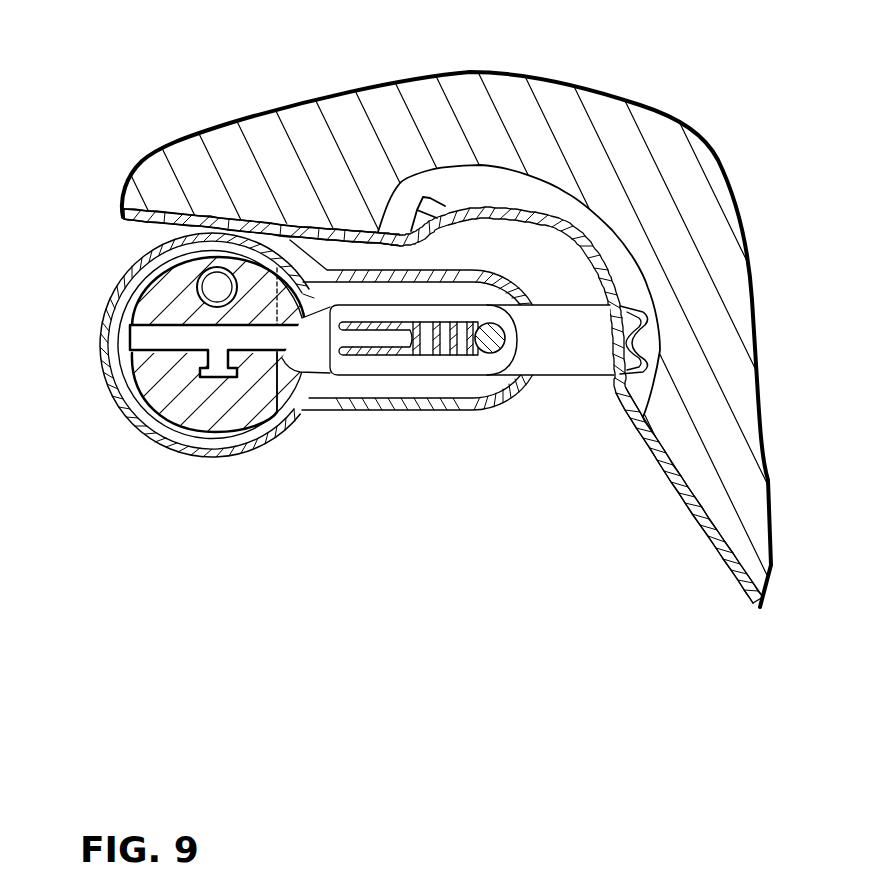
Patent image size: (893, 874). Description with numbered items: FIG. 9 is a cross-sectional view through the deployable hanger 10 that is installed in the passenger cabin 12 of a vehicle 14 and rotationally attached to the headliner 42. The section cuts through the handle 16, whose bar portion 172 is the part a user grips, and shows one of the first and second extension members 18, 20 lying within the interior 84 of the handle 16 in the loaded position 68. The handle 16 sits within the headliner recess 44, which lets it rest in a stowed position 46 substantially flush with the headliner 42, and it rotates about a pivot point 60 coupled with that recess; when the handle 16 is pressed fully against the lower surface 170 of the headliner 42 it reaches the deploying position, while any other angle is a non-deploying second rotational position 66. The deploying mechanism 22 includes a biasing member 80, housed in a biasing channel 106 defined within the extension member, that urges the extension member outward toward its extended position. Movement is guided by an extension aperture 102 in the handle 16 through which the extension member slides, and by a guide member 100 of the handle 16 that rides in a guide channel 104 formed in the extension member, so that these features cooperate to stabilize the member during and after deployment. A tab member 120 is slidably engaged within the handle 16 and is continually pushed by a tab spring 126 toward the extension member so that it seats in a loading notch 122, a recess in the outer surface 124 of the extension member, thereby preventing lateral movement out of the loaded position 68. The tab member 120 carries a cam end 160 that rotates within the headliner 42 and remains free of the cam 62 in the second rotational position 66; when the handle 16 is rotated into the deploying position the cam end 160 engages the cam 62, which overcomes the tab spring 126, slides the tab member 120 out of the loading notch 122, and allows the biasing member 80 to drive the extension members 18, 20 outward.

The deployable hanger 10 is at (177, 90).
The passenger cabin 12 is at (78, 280).
The vehicle 14 is at (661, 78).
The handle 16 is at (385, 413).
The first extension member 18 is at (233, 417).
The second extension member 20 is at (150, 300).
The deploying mechanism 22 is at (440, 378).
The headliner 42 is at (643, 437).
The headliner recess 44 is at (150, 213).
The stowed position 46 is at (118, 453).
The pivot point 60 is at (517, 380).
The cam 62 is at (432, 210).
The second rotational position 66 is at (150, 455).
The loaded position 68 is at (113, 262).
The biasing member 80 is at (140, 333).
The interior 84 is at (182, 440).
The guide member 100 is at (215, 362).
The extension aperture 102 is at (192, 247).
The guide channel 104 is at (268, 408).
The biasing channel 106 is at (222, 284).
The tab member 120 is at (409, 382).
The loading notch 122 is at (302, 372).
The outer surface 124 is at (253, 392).
The tab spring 126 is at (463, 360).
The cam end 160 is at (640, 337).
The lower surface 170 is at (702, 523).
The bar portion 172 is at (205, 434).